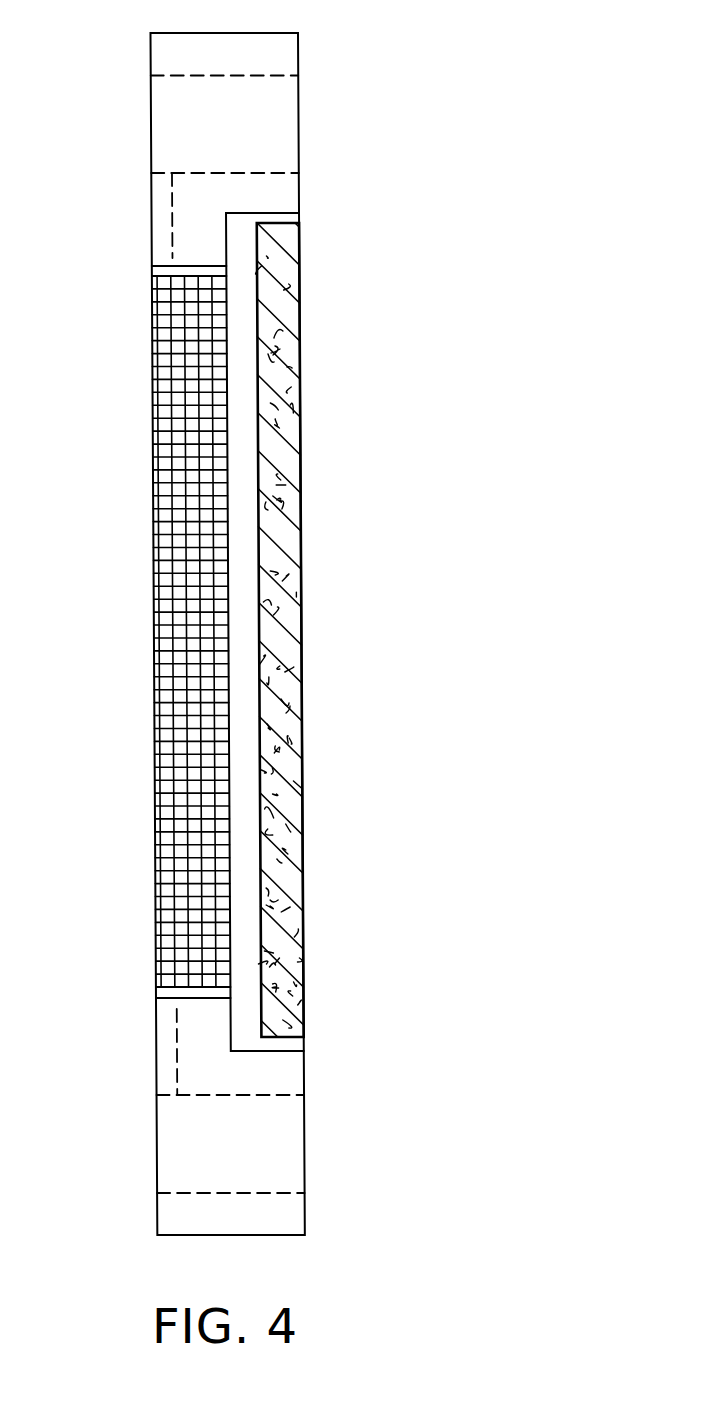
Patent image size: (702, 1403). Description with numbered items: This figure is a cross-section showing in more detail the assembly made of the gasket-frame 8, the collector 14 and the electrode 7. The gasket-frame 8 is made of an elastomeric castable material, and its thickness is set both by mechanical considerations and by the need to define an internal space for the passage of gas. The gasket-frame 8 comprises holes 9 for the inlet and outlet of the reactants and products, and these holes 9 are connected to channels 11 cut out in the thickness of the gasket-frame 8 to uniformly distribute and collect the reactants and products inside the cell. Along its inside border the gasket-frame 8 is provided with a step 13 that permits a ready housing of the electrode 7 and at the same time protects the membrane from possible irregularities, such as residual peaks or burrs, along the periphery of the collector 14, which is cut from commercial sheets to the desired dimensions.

The electrode 7 is at (282, 515).
The gasket-frame 8 is at (282, 62).
The holes 9 is at (281, 127).
The channels 11 is at (149, 225).
The step 13 is at (216, 225).
The collector 14 is at (173, 628).